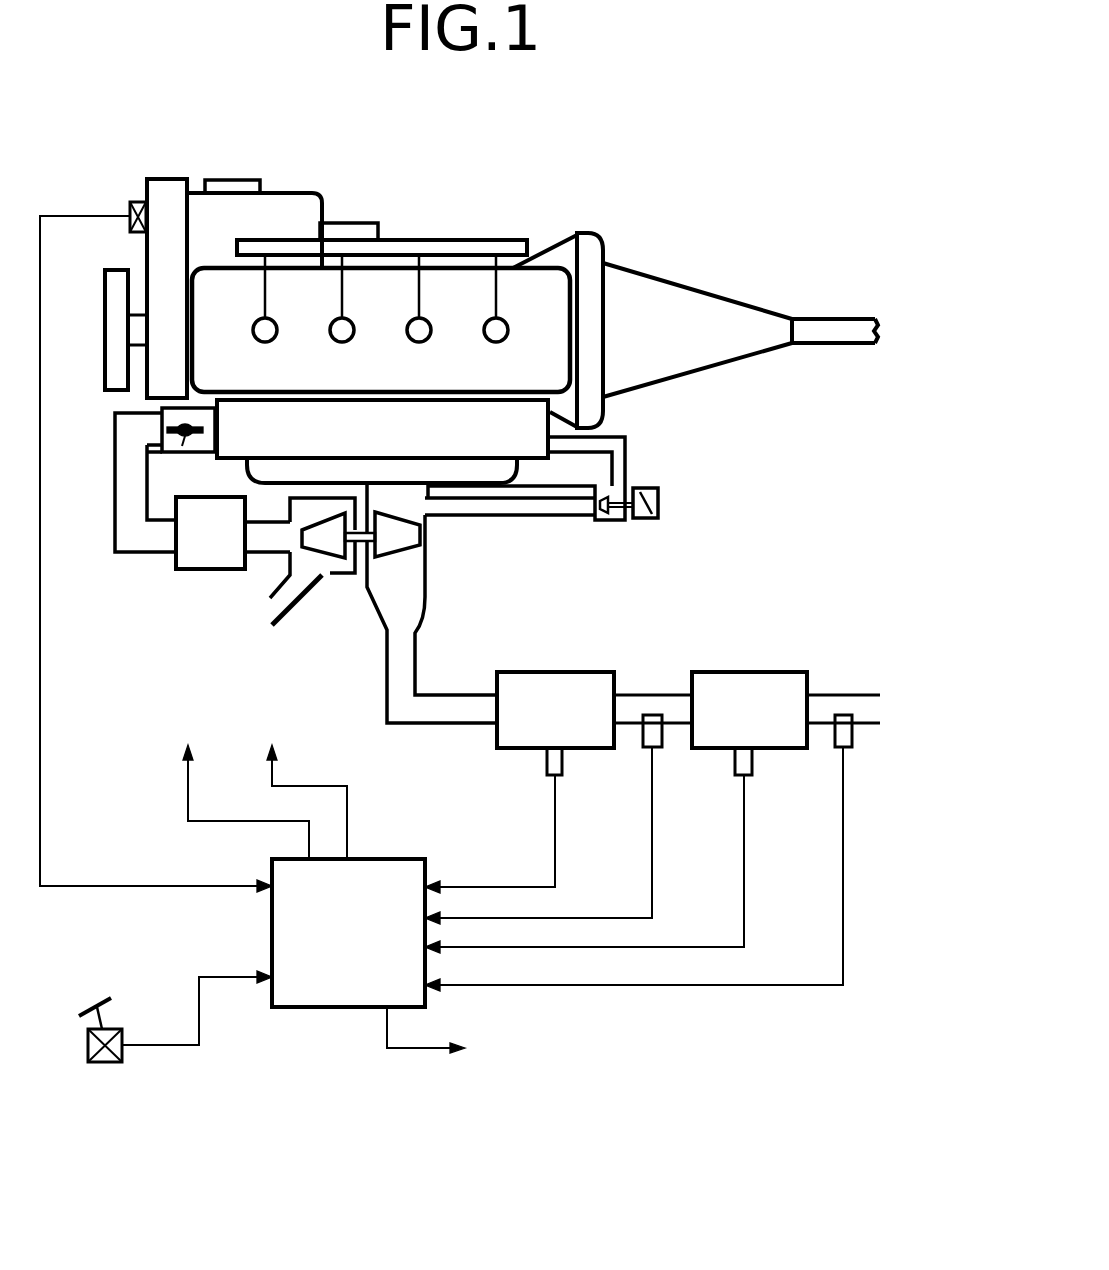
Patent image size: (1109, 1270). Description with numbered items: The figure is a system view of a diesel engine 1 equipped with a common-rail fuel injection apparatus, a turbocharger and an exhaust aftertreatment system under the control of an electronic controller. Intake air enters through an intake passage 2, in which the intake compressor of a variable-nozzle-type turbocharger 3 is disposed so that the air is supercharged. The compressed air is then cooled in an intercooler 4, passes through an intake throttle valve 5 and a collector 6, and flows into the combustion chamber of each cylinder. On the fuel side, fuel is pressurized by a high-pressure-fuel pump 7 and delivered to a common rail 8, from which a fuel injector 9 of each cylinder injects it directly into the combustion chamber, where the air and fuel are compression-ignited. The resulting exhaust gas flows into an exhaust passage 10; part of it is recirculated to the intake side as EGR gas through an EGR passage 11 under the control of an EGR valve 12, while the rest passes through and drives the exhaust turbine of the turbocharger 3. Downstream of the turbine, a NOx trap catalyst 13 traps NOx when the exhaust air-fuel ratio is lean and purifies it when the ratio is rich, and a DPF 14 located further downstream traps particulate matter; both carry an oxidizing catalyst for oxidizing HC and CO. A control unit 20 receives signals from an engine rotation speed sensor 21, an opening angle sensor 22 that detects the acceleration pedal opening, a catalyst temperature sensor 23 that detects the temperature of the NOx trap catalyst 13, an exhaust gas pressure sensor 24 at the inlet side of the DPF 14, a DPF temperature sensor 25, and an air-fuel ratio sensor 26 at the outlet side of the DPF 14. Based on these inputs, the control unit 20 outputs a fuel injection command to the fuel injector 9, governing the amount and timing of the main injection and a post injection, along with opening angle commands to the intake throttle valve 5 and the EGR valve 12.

The diesel engine 1 is at (544, 279).
The intake passage 2 is at (297, 607).
The variable-nozzle-type turbocharger 3 is at (328, 556).
The intercooler 4 is at (207, 573).
The intake throttle valve 5 is at (167, 452).
The collector 6 is at (243, 448).
The high-pressure-fuel pump 7 is at (283, 193).
The common rail 8 is at (452, 238).
The fuel injector 9 is at (278, 333).
The exhaust passage 10 is at (423, 613).
The EGR passage 11 is at (537, 516).
The EGR valve 12 is at (662, 488).
The NOx trap catalyst 13 is at (562, 672).
The DPF 14 is at (742, 672).
The control unit 20 is at (316, 1007).
The engine rotation speed sensor 21 is at (130, 202).
The opening angle sensor 22 is at (91, 1062).
The catalyst temperature sensor 23 is at (542, 767).
The exhaust gas pressure sensor 24 is at (643, 747).
The DPF temperature sensor 25 is at (733, 775).
The air-fuel ratio sensor 26 is at (835, 747).